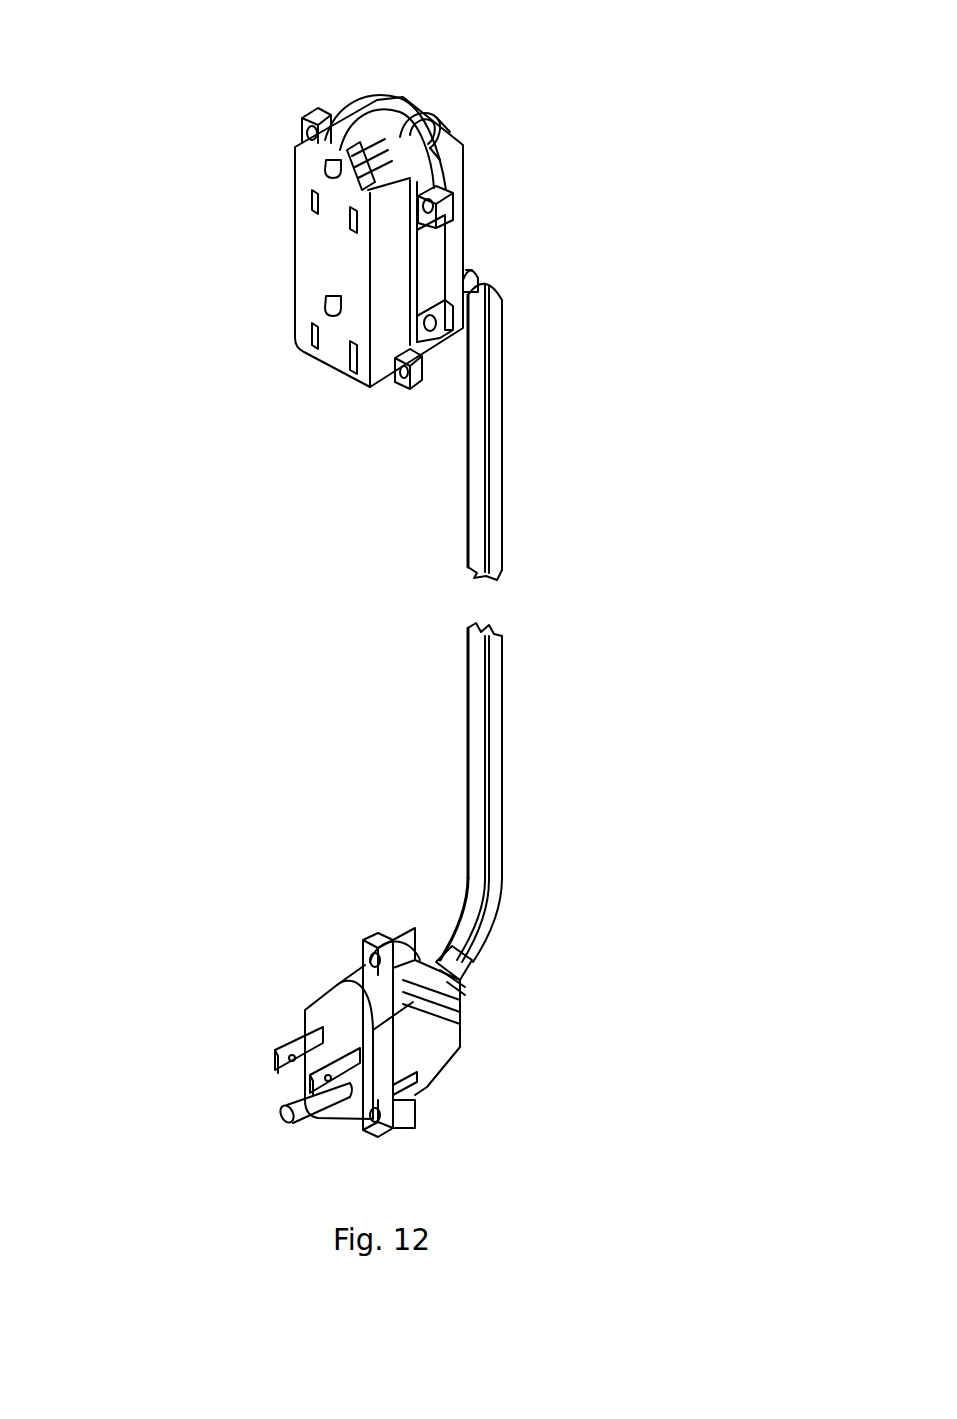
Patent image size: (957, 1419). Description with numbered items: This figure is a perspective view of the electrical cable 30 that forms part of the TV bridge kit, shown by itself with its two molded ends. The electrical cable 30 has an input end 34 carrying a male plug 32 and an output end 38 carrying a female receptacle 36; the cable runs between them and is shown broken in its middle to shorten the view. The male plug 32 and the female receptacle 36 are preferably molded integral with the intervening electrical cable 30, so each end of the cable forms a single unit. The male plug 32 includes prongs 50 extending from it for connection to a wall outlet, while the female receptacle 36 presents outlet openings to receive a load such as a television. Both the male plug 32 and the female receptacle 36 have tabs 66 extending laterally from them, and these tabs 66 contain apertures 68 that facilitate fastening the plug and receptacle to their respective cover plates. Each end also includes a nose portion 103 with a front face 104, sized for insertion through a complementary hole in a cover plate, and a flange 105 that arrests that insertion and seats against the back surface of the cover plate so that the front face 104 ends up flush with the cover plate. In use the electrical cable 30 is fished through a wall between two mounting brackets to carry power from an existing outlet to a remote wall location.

The electrical cable 30 is at (503, 742).
The male plug 32 is at (445, 1060).
The input end 34 is at (410, 950).
The female receptacle 36 is at (393, 392).
The output end 38 is at (410, 110).
The prongs 50 is at (295, 1048).
The tabs 66 is at (453, 207).
The apertures 68 is at (443, 187).
The nose portion 103 is at (385, 268).
The front face 104 is at (310, 262).
The flange 105 is at (383, 108).